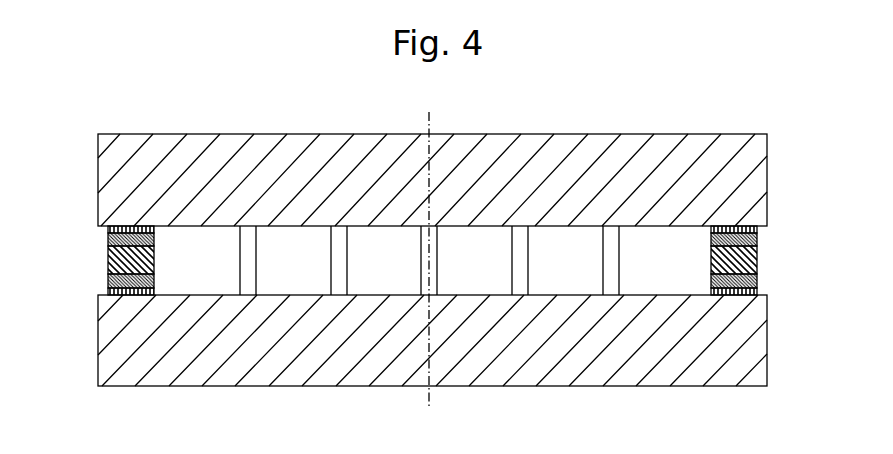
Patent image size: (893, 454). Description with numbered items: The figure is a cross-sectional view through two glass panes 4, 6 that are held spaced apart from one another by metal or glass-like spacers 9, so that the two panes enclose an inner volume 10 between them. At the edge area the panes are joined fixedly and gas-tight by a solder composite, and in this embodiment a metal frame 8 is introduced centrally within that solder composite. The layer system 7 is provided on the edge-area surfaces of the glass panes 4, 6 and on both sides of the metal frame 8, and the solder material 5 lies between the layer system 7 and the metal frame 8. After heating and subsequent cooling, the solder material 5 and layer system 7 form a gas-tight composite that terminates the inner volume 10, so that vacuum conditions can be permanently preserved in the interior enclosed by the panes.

The glass pane 4 is at (755, 167).
The glass pane 6 is at (756, 348).
The spacer 9 is at (254, 234).
The volume 10 is at (563, 235).
The layer system 7 is at (98, 228).
The solder material 5 is at (97, 240).
The metal frame 8 is at (97, 261).